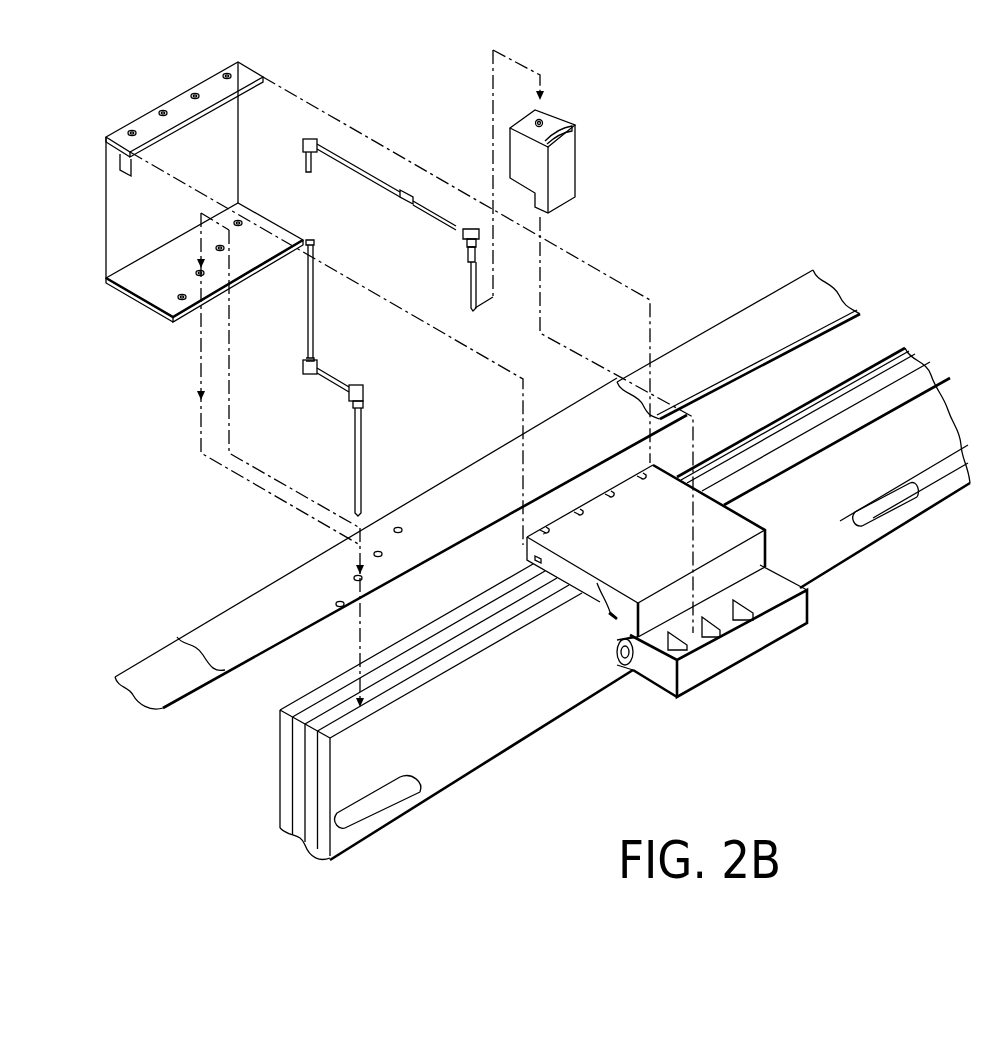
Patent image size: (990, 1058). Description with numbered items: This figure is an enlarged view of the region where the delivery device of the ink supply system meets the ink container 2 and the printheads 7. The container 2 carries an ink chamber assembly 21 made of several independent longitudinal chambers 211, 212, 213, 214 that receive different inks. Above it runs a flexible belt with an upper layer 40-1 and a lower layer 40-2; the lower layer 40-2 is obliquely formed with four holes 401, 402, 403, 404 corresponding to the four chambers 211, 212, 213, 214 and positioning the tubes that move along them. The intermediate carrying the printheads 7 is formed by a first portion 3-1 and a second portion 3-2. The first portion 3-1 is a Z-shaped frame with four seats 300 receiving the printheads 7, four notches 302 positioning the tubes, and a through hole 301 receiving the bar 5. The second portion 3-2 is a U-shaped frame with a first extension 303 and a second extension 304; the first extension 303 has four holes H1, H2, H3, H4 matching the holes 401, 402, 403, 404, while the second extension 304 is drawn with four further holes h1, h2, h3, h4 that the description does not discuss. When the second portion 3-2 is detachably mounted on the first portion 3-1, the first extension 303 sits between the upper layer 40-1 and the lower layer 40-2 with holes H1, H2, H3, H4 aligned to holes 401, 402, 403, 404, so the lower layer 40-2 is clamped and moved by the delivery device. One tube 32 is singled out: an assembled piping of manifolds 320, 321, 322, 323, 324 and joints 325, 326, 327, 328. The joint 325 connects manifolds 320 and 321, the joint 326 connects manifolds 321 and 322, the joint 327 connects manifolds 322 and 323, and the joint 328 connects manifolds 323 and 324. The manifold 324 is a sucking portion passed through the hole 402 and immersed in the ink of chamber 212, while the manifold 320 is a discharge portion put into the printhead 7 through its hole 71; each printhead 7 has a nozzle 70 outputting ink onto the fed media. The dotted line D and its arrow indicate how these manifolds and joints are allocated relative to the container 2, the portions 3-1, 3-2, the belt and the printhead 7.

The container 2 is at (480, 775).
The ink chamber assembly 21 is at (349, 721).
The chamber 211 is at (322, 820).
The chamber 212 is at (310, 793).
The chamber 213 is at (297, 760).
The chamber 214 is at (283, 732).
The first portion 3-1 is at (676, 669).
The second portion 3-2 is at (104, 153).
The seat 300 is at (652, 576).
The through hole 301 is at (618, 650).
The notch 302 is at (540, 528).
The first extension 303 is at (163, 307).
The second extension 304 is at (247, 72).
The tube 32 is at (357, 298).
The manifold 320 is at (475, 273).
The manifold 321 is at (362, 167).
The manifold 322 is at (312, 303).
The manifold 323 is at (340, 380).
The manifold 324 is at (357, 462).
The joint 325 is at (470, 228).
The joint 326 is at (313, 138).
The joint 327 is at (305, 368).
The joint 328 is at (365, 397).
The upper layer 40-1 is at (738, 344).
The lower layer 40-2 is at (401, 543).
The hole 401 is at (336, 604).
The hole 402 is at (354, 578).
The hole 403 is at (380, 551).
The hole 404 is at (402, 529).
The bar 5 is at (924, 497).
The printhead 7 is at (582, 164).
The nozzle 70 is at (570, 200).
The hole 71 is at (543, 121).
The hole h1 is at (130, 131).
The hole h2 is at (161, 111).
The hole h3 is at (193, 94).
The hole h4 is at (225, 74).
The hole H1 is at (180, 294).
The hole H2 is at (198, 270).
The hole H3 is at (219, 245).
The hole H4 is at (237, 220).
The dotted line D is at (199, 436).